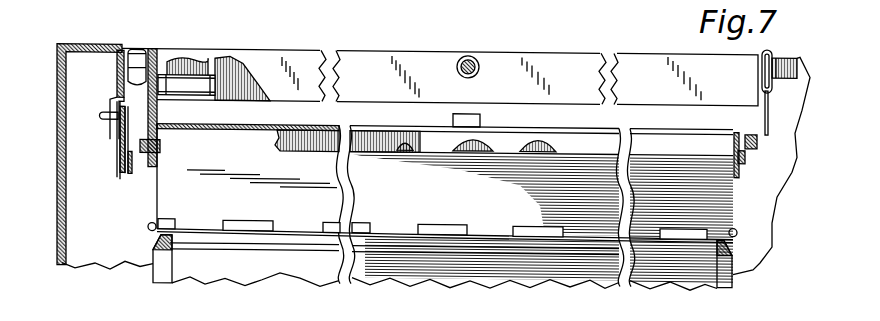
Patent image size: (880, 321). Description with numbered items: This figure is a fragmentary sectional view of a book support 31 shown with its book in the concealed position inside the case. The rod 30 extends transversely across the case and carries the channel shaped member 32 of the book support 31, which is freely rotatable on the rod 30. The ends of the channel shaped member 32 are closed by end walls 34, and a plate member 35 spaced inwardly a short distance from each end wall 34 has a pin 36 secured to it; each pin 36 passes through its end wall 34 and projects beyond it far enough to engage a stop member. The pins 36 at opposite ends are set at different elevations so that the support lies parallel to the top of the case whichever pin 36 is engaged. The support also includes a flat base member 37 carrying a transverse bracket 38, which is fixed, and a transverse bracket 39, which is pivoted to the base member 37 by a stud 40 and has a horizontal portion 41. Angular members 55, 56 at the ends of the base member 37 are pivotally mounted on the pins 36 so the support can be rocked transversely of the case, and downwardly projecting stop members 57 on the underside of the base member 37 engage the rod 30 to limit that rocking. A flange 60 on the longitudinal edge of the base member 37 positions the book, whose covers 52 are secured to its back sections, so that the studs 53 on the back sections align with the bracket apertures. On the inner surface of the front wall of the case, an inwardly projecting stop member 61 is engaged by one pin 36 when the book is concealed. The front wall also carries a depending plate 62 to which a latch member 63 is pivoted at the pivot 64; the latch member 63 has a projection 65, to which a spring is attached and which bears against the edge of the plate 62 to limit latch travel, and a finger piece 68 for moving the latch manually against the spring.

The rod 30 is at (468, 52).
The book support 31 is at (390, 40).
The channel shaped member 32 is at (560, 52).
The end wall 34 is at (170, 60).
The plate member 35 is at (219, 58).
The pin 36 is at (184, 87).
The base member 37 is at (414, 125).
The bracket 38 is at (152, 167).
The bracket 39 is at (738, 170).
The stud 40 is at (775, 208).
The horizontal portion 41 is at (757, 135).
The cover 52 is at (376, 272).
The stud 53 is at (143, 152).
The angular member 55 is at (158, 110).
The angular member 56 is at (769, 110).
The stop member 57 is at (480, 114).
The flange 60 is at (279, 145).
The stop member 61 is at (117, 63).
The depending plate 62 is at (119, 130).
The latch member 63 is at (125, 141).
The pivot 64 is at (125, 156).
The projection 65 is at (103, 115).
The finger piece 68 is at (131, 47).